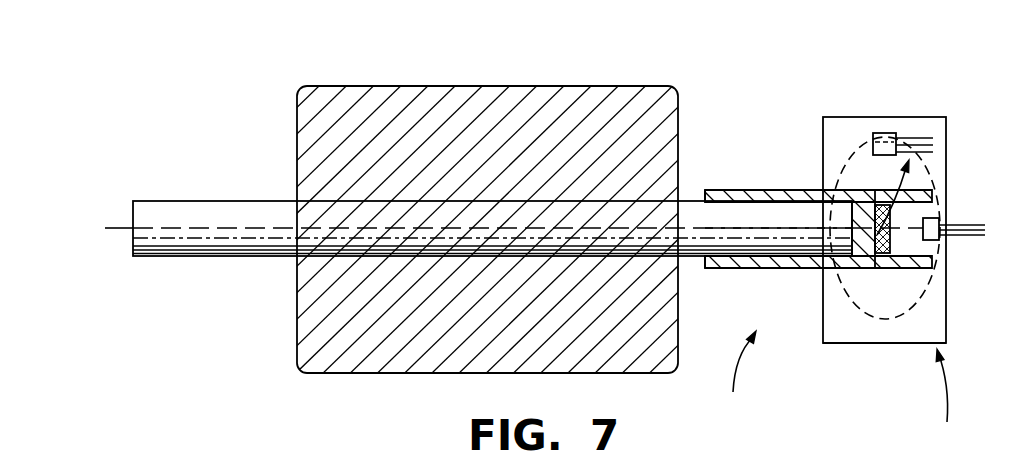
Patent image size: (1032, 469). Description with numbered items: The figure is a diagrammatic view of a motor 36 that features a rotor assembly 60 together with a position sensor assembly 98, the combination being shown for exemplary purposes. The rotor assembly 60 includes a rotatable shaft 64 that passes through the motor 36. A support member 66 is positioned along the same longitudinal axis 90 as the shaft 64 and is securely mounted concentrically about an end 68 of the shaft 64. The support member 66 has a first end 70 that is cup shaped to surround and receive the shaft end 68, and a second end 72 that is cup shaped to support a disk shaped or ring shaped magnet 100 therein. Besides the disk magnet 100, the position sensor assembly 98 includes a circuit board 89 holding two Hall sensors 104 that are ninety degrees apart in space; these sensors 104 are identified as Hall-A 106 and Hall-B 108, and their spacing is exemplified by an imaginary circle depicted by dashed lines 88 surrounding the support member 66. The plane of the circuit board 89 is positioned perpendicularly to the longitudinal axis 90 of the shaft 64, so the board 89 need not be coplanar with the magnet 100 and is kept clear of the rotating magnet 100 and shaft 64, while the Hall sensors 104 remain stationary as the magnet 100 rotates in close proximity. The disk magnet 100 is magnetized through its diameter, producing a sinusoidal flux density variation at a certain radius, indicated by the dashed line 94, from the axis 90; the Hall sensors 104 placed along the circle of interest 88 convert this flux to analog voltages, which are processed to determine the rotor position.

The motor 36 is at (362, 85).
The rotatable shaft 64 is at (269, 208).
The longitudinal axis 90 is at (122, 228).
The support member 66 is at (760, 190).
The first end 70 is at (727, 190).
The end of the shaft 68 is at (817, 217).
The position sensor assembly 98 is at (946, 137).
The Hall-A 106 is at (883, 133).
The disk shaped magnet 100 is at (893, 220).
The certain radius 94 is at (946, 175).
The Hall-B 108 is at (947, 237).
The imaginary circle 88 is at (865, 315).
The circuit board 89 is at (900, 345).
The Hall sensors 104 is at (949, 398).
The rotor assembly 60 is at (738, 377).
The second end 72 is at (918, 263).